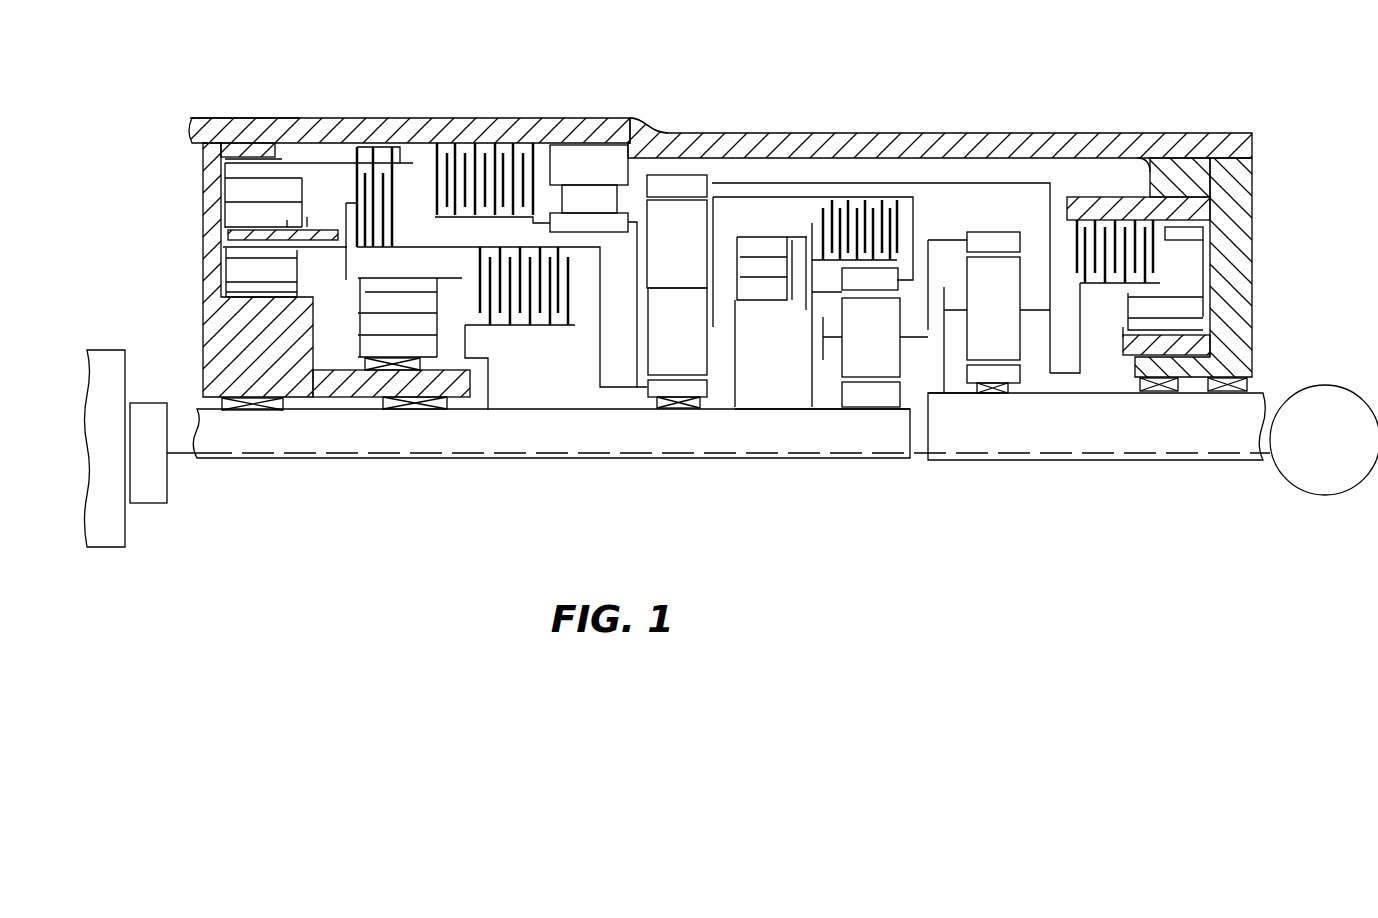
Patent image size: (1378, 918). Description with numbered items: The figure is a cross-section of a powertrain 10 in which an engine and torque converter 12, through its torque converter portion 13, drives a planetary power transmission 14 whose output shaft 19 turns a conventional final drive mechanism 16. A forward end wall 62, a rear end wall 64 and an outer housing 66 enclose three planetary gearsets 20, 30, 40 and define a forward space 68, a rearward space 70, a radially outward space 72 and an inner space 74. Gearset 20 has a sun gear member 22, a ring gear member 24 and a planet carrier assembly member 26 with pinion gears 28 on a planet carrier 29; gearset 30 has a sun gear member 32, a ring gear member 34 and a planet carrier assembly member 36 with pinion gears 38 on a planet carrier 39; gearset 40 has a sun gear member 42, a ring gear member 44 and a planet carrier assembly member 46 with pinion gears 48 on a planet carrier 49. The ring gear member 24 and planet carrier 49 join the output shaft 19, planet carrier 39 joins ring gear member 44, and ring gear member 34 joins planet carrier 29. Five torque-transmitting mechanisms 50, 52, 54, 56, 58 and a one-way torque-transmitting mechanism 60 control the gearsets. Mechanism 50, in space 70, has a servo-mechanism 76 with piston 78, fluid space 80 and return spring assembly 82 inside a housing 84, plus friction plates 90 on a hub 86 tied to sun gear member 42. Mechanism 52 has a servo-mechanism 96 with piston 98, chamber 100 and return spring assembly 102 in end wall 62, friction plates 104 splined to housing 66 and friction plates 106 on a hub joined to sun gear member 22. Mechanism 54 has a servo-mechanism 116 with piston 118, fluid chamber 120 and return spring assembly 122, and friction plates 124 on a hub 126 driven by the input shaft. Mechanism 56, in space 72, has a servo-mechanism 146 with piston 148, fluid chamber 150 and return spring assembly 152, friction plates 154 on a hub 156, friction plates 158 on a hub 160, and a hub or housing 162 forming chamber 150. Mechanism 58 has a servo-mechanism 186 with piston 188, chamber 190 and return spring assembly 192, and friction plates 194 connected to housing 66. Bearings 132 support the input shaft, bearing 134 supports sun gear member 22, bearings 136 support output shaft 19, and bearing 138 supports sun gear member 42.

The powertrain 10 is at (222, 82).
The engine and torque converter 12 is at (120, 345).
The torque converter 13 is at (168, 398).
The planetary power transmission 14 is at (686, 93).
The final drive mechanism 16 is at (1290, 395).
The output shaft 19 is at (1073, 457).
The planetary gearset 20 is at (716, 397).
The sun gear member 22 is at (652, 392).
The ring gear member 24 is at (700, 178).
The planet carrier assembly member 26 is at (710, 227).
The pinion gears 28 is at (677, 287).
The planet carrier 29 is at (640, 290).
The planetary gearset 30 is at (877, 413).
The sun gear member 32 is at (855, 400).
The ring gear member 34 is at (893, 272).
The planet carrier assembly member 36 is at (935, 320).
The pinion gears 38 is at (856, 333).
The planet carrier 39 is at (837, 340).
The planetary gearset 40 is at (985, 412).
The sun gear member 42 is at (1017, 377).
The ring gear member 44 is at (1000, 240).
The planet carrier assembly member 46 is at (1066, 292).
The pinion gears 48 is at (993, 308).
The planet carrier 49 is at (960, 307).
The torque-transmitting mechanism 50 is at (1113, 190).
The torque-transmitting mechanism 52 is at (343, 255).
The torque-transmitting mechanism 54 is at (497, 342).
The torque-transmitting mechanism 56 is at (903, 192).
The torque-transmitting mechanism 58 is at (503, 140).
The one-way torque-transmitting mechanism 60 is at (625, 145).
The forward end wall 62 is at (203, 283).
The rear end wall 64 is at (1243, 227).
The outer housing 66 is at (870, 143).
The forward space 68 is at (424, 240).
The rearward space 70 is at (1166, 198).
The radially outward space 72 is at (828, 177).
The inner space 74 is at (775, 405).
The fluid-operated servo-mechanism 76 is at (1195, 275).
The piston 78 is at (1237, 187).
The fluid space 80 is at (1197, 297).
The return spring assembly 82 is at (1180, 317).
The housing 84 is at (1205, 198).
The hub 86 is at (1103, 285).
The friction plates 90 is at (1075, 282).
The servo-mechanism 96 is at (214, 262).
The fluid-operated piston 98 is at (223, 223).
The chamber 100 is at (222, 290).
The return spring assembly 102 is at (262, 283).
The friction plates 104 is at (353, 185).
The friction plates 106 is at (388, 242).
The servo-mechanism 116 is at (398, 383).
The fluid-operated piston 118 is at (450, 300).
The fluid chamber 120 is at (357, 337).
The return spring assembly 122 is at (392, 335).
The friction plates 124 is at (562, 275).
The hub 126 is at (533, 172).
The bushings or bearings 132 is at (252, 412).
The bushing or bearing 134 is at (687, 407).
The bushings or bearings 136 is at (1227, 393).
The bushing or bearing 138 is at (997, 385).
The servo-mechanism 146 is at (797, 215).
The fluid-operated piston 148 is at (803, 295).
The fluid chamber 150 is at (737, 235).
The return spring assembly 152 is at (752, 302).
The friction plates 154 is at (787, 227).
The hub 156 is at (805, 312).
The friction plates 158 is at (888, 222).
The hub 160 is at (880, 193).
The hub or housing 162 is at (740, 387).
The servo-mechanism 186 is at (253, 147).
The fluid-operated piston 188 is at (283, 163).
The chamber 190 is at (213, 150).
The return spring assembly 192 is at (292, 172).
The friction plates 194 is at (458, 162).